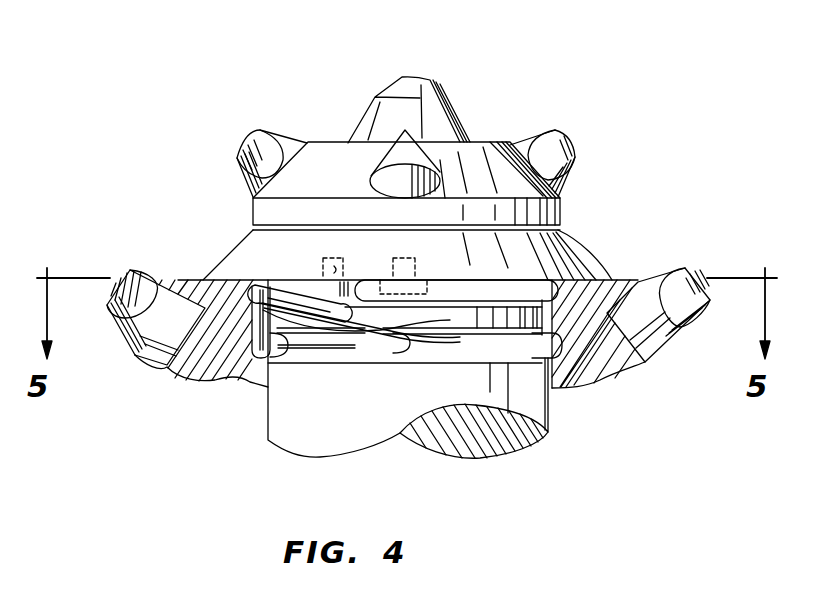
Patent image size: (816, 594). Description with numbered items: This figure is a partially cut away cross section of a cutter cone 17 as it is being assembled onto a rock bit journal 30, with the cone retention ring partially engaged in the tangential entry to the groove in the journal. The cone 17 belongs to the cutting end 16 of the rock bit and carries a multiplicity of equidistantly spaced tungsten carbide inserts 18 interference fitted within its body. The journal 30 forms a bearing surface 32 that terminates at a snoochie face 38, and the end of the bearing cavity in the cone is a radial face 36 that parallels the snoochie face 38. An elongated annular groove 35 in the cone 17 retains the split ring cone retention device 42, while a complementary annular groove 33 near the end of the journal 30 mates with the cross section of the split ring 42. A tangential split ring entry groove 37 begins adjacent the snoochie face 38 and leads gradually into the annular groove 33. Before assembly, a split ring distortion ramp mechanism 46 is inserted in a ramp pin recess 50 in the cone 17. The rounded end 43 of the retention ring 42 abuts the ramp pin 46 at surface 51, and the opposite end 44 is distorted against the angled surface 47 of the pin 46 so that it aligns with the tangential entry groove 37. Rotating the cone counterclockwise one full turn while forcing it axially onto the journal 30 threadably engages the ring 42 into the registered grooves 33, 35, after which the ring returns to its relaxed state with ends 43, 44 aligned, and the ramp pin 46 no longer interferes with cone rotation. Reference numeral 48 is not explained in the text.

The cutting end 16 is at (452, 94).
The cutter cone 17 is at (450, 142).
The tungsten carbide inserts 18 is at (235, 159).
The rock bit journal 30 is at (298, 459).
The bearing surface 32 is at (316, 425).
The annular groove 33 is at (438, 362).
The annular groove 35 is at (238, 378).
The radial face 36 is at (446, 286).
The tangential split ring entry groove 37 is at (258, 333).
The snoochie face 38 is at (503, 306).
The split ring cone retention device 42 is at (522, 287).
The end of split ring 43 is at (358, 286).
The end of split ring 44 is at (368, 338).
The split ring distortion ramp mechanism 46 is at (262, 278).
The angled surface 47 is at (292, 344).
The pivot 48 is at (326, 272).
The ramp pin recess 50 is at (346, 263).
The surface 51 is at (388, 340).